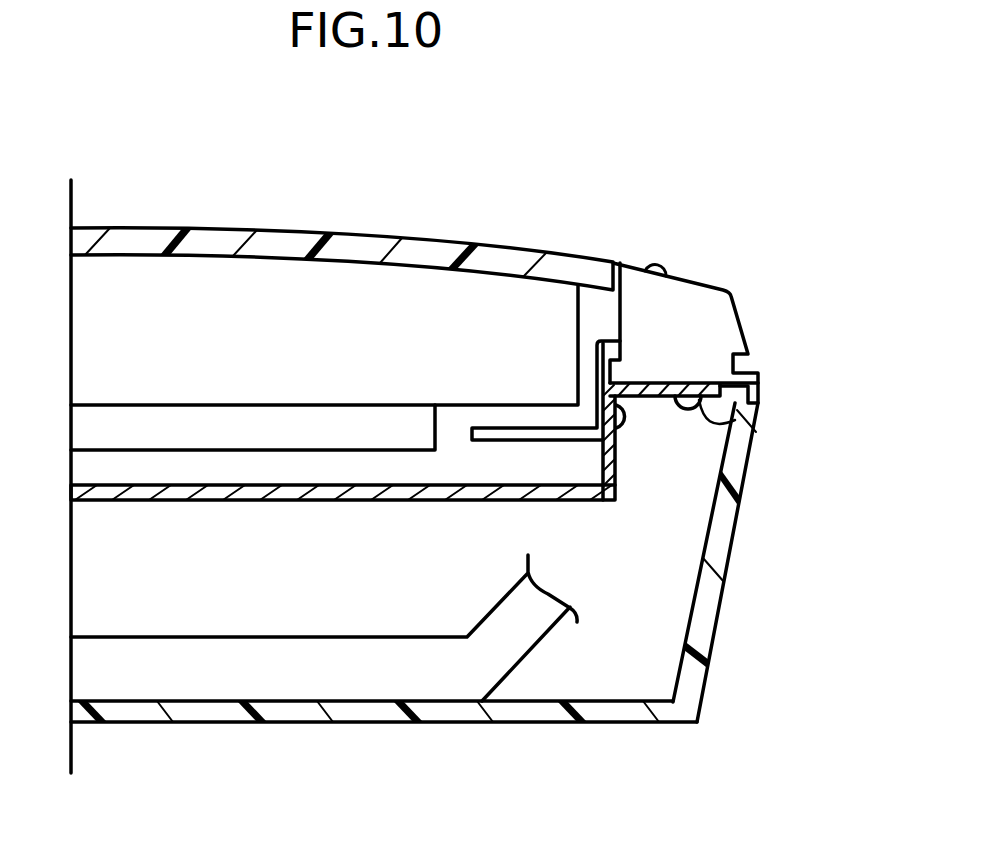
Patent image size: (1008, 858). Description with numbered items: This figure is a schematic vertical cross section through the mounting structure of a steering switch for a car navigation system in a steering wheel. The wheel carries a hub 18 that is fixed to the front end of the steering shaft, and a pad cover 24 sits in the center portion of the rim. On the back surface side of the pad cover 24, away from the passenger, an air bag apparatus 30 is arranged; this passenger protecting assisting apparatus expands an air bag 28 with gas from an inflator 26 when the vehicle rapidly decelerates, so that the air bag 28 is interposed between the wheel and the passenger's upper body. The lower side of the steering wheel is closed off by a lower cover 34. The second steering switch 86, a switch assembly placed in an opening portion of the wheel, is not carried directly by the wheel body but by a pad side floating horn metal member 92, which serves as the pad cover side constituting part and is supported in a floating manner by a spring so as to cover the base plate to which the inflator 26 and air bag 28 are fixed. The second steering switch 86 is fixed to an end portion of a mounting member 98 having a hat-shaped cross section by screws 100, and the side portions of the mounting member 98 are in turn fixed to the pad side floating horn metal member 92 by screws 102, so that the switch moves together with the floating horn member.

The hub 18 is at (417, 673).
The pad cover 24 is at (430, 255).
The inflator 26 is at (272, 430).
The air bag 28 is at (228, 290).
The air bag apparatus 30 is at (208, 522).
The lower cover 34 is at (542, 714).
The second steering switch 86 is at (713, 270).
The pad side floating horn metal member 92 is at (517, 437).
The mounting member 98 is at (190, 493).
The screws 100 is at (743, 416).
The screws 102 is at (633, 418).